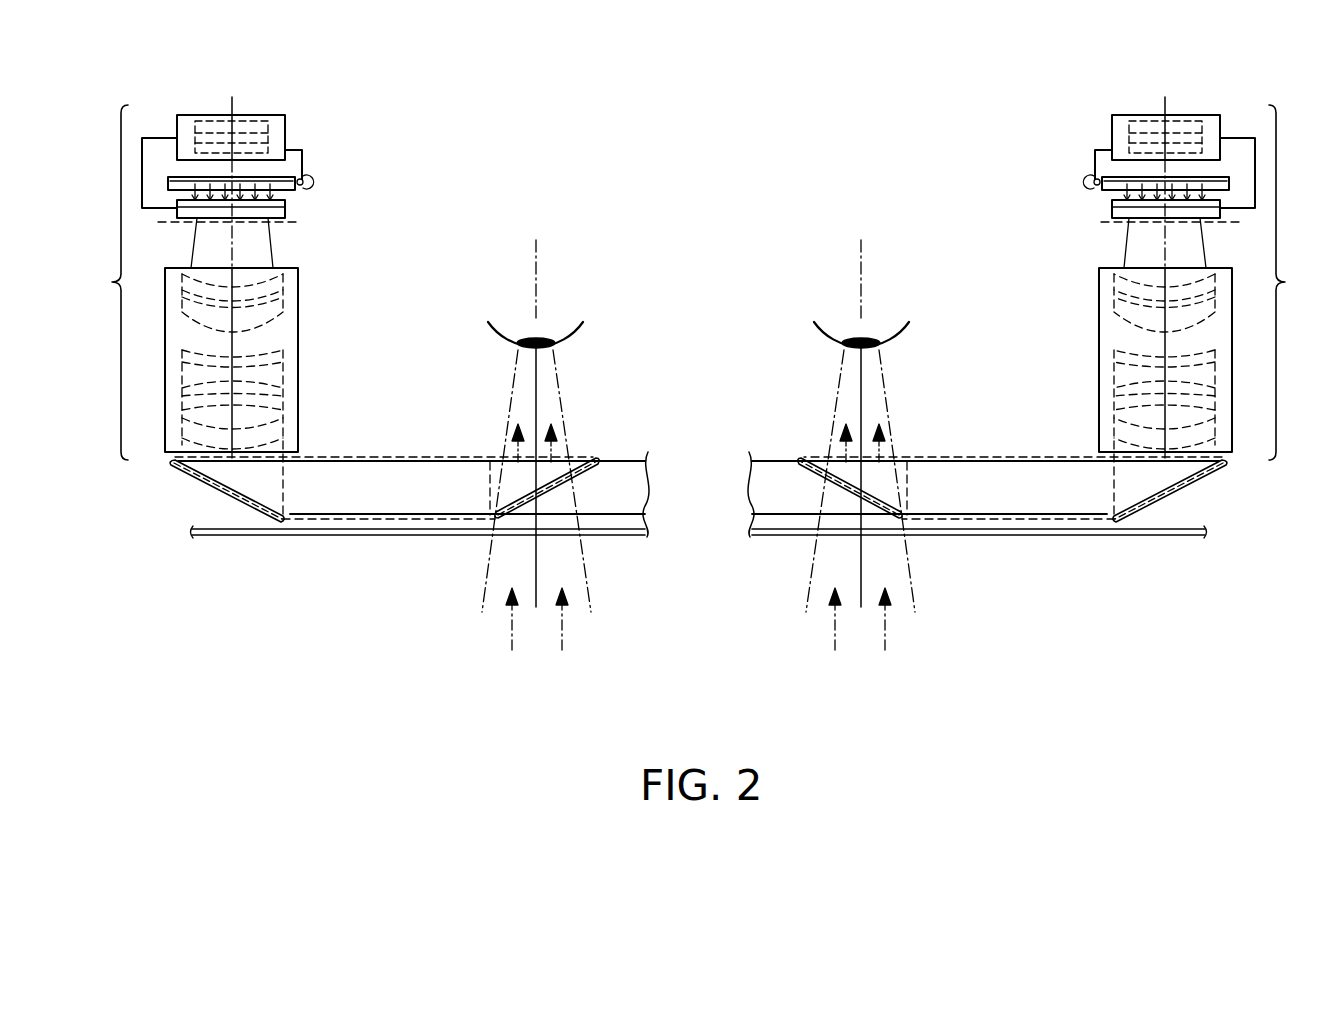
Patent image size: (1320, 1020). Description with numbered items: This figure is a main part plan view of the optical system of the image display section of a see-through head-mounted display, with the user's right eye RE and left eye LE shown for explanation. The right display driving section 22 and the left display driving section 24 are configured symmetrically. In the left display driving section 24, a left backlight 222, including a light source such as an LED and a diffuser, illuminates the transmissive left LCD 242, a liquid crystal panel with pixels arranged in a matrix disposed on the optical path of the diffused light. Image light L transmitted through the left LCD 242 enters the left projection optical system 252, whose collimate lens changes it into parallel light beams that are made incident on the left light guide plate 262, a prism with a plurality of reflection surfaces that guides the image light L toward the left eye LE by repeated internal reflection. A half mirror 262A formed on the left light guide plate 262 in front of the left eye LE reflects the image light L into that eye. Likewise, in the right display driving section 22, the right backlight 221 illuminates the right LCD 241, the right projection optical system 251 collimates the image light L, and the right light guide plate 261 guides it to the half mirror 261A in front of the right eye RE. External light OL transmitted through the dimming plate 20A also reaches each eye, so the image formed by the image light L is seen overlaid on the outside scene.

The right display driving section 22 is at (105, 282).
The left display driving section 24 is at (1292, 282).
The right backlight 221 is at (309, 146).
The left backlight 222 is at (1088, 146).
The right LCD 241 is at (287, 212).
The left LCD 242 is at (1110, 212).
The right projection optical system 251 is at (299, 297).
The left projection optical system 252 is at (1098, 297).
The right light guide plate 261 is at (278, 520).
The left light guide plate 262 is at (1119, 520).
The half mirror 261A is at (543, 495).
The half mirror 262A is at (854, 495).
The dimming plate 20A is at (216, 537).
The image light L is at (232, 258).
The external light OL is at (507, 620).
The right eye RE is at (570, 335).
The left eye LE is at (830, 335).